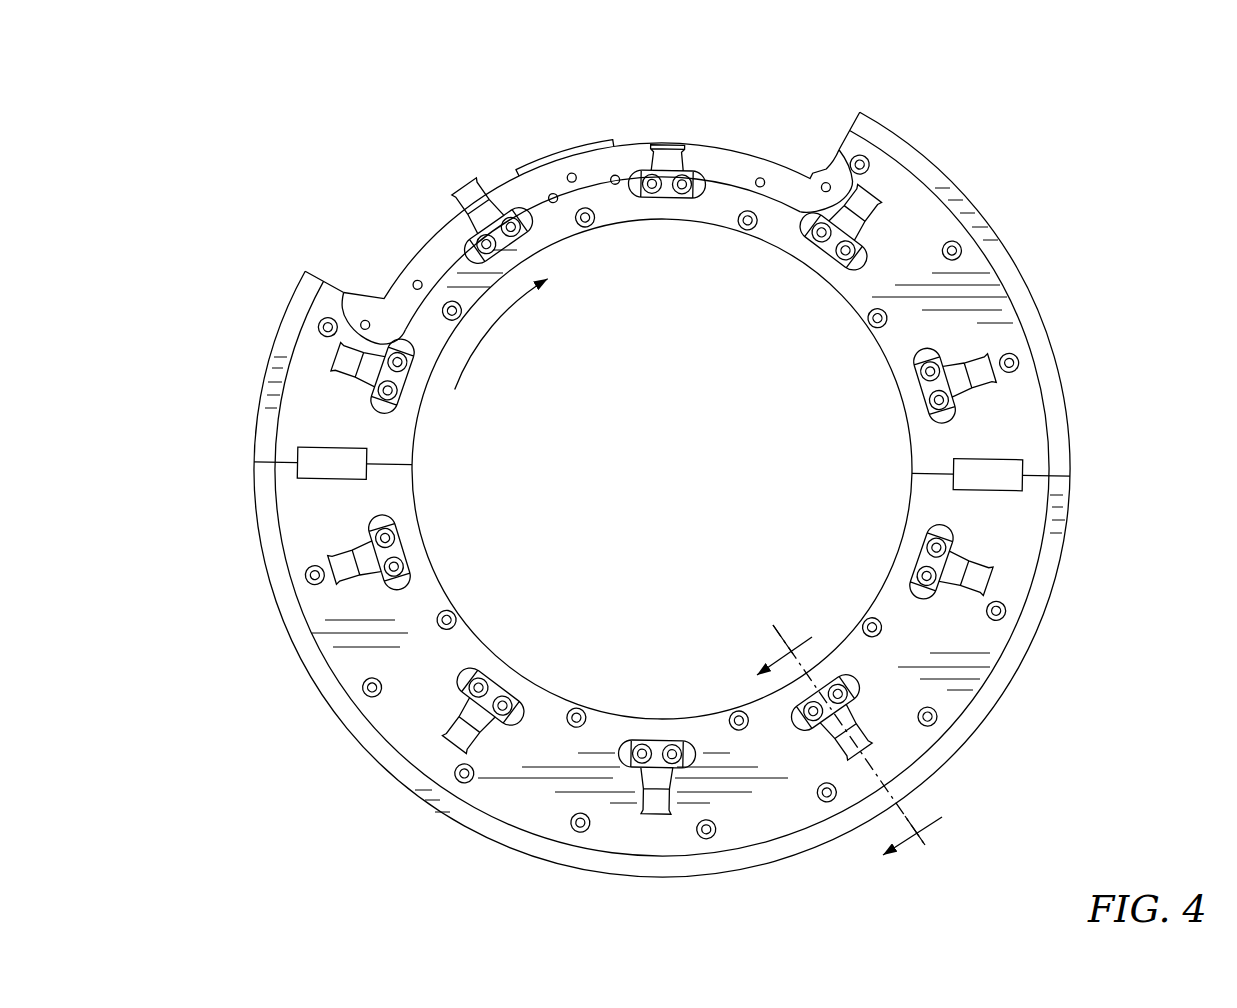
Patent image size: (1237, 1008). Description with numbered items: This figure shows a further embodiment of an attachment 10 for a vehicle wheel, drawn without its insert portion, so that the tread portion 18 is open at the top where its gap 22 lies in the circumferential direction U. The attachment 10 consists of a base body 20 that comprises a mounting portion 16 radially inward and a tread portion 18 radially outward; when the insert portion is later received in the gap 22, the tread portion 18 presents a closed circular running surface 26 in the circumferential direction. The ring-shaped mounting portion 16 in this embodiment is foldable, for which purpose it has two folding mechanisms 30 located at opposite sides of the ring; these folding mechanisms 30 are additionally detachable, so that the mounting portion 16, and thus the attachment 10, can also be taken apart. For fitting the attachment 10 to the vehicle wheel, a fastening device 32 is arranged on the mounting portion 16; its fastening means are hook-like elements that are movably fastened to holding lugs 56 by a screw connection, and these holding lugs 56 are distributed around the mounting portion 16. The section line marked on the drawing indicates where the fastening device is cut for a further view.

The attachment 10 is at (1065, 150).
The mounting portion 16 is at (540, 722).
The tread portion 18 is at (401, 712).
The base body 20 is at (990, 327).
The gap 22 is at (800, 124).
The closed circular running surface 26 is at (992, 226).
The folding mechanisms 30 is at (990, 470).
The fastening device 32 is at (893, 198).
The holding lugs 56 is at (403, 547).